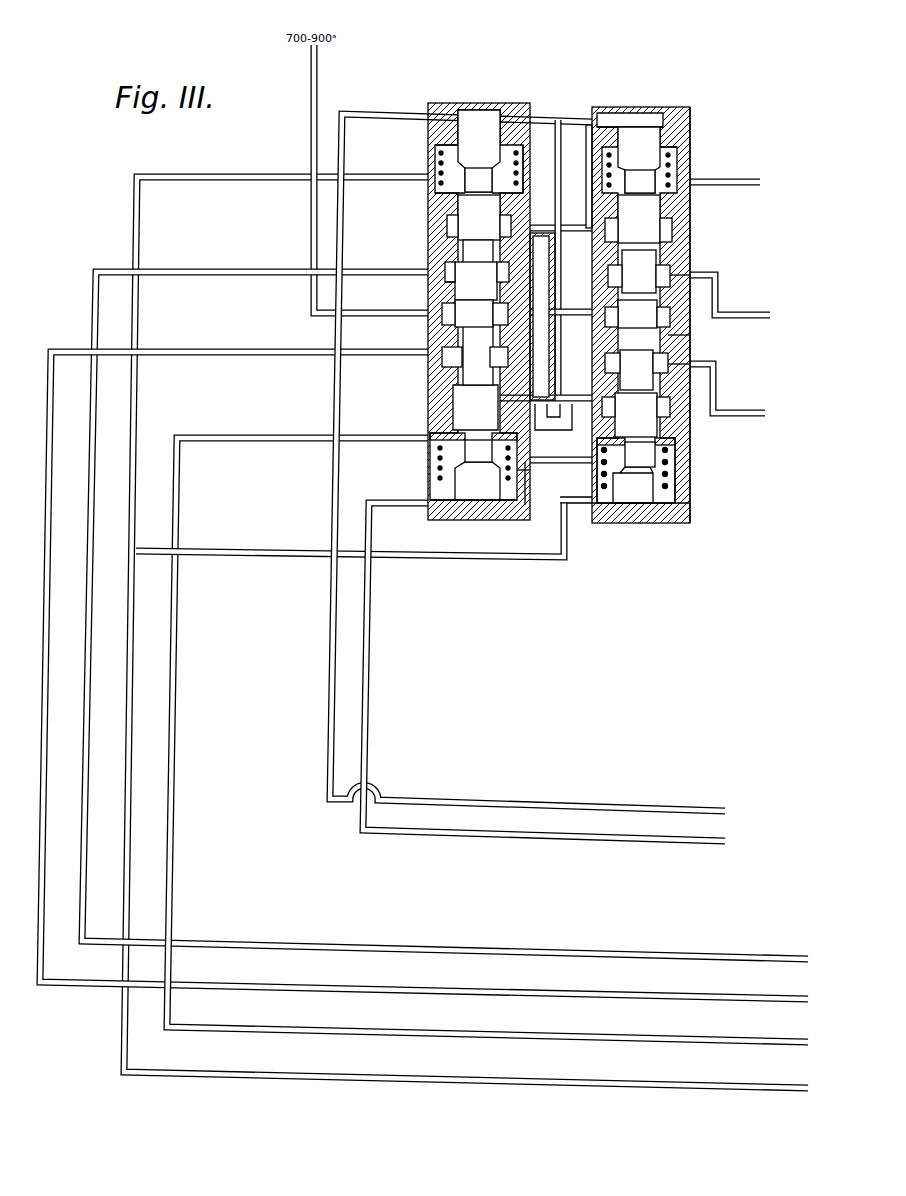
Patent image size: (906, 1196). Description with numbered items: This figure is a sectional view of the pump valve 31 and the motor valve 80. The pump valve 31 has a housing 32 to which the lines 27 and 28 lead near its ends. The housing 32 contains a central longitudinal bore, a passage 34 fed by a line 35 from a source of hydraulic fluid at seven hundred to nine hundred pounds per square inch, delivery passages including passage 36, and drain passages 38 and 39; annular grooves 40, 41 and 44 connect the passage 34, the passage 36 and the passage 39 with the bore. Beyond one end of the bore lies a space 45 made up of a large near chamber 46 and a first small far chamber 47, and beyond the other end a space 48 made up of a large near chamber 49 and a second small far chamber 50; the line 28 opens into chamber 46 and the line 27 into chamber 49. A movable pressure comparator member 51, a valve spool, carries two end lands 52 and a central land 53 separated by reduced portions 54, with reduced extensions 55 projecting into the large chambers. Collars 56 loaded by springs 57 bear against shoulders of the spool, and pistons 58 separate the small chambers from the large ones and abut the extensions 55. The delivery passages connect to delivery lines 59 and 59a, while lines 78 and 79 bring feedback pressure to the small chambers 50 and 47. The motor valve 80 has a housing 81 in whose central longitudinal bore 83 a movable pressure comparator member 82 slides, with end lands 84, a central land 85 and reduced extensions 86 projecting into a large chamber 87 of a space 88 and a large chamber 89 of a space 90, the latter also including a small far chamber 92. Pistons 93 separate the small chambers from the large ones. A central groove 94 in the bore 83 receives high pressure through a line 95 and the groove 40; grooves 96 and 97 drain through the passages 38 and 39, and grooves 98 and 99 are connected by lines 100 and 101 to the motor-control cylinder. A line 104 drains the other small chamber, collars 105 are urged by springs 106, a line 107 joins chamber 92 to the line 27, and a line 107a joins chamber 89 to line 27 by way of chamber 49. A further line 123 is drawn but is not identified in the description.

The line 27 is at (306, 442).
The line 28 is at (263, 174).
The valve 31 is at (483, 101).
The housing 32 is at (488, 418).
The passage 34 is at (440, 331).
The line 35 is at (311, 314).
The delivery passage 36 is at (440, 262).
The drain passage 38 is at (537, 232).
The drain passage 39 is at (556, 397).
The annular groove 40 is at (440, 298).
The annular groove 41 is at (449, 250).
The annular groove 44 is at (526, 400).
The space 45 is at (437, 150).
The large near chamber 46 is at (526, 150).
The first small far chamber 47 is at (478, 113).
The space 48 is at (521, 473).
The large near chamber 49 is at (529, 506).
The second small far chamber 50 is at (478, 521).
The movable pressure comparator member 51 is at (548, 340).
The end lands 52 is at (490, 225).
The central land 53 is at (490, 323).
The reduced portions 54 is at (490, 280).
The reduced extensions 55 is at (478, 315).
The collars 56 is at (437, 197).
The springs 57 is at (437, 157).
The pistons 58 is at (490, 153).
The delivery line 59 is at (264, 268).
The delivery line 59a is at (273, 356).
The line 78 is at (372, 503).
The line 79 is at (342, 113).
The motor valve 80 is at (651, 107).
The housing 81 is at (693, 108).
The movable pressure comparator member 82 is at (671, 336).
The central longitudinal bore 83 is at (681, 215).
The end lands 84 is at (650, 231).
The central land 85 is at (650, 323).
The reduced extensions 86 is at (650, 463).
The chamber 87 is at (681, 150).
The space 88 is at (691, 135).
The chamber 89 is at (688, 500).
The space 90 is at (676, 465).
The chamber 92 is at (660, 521).
The pistons 93 is at (634, 135).
The central annular internal peripheral groove 94 is at (668, 329).
The line 95 is at (574, 322).
The annular peripheral groove 96 is at (681, 235).
The annular peripheral groove 97 is at (676, 403).
The annular peripheral groove 98 is at (689, 262).
The annular peripheral groove 99 is at (676, 359).
The line 100 is at (752, 312).
The line 101 is at (718, 383).
The line 104 is at (588, 124).
The collars 105 is at (600, 188).
The springs 106 is at (679, 160).
The line 107 is at (535, 561).
The line 107a is at (567, 520).
The conduit 123 is at (761, 180).